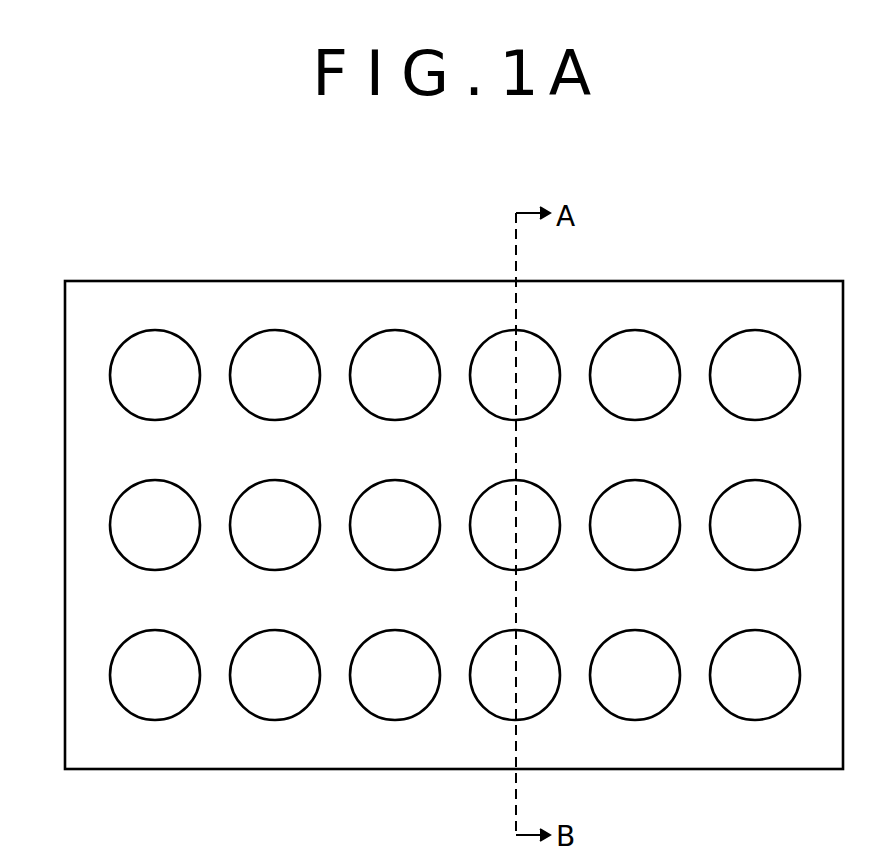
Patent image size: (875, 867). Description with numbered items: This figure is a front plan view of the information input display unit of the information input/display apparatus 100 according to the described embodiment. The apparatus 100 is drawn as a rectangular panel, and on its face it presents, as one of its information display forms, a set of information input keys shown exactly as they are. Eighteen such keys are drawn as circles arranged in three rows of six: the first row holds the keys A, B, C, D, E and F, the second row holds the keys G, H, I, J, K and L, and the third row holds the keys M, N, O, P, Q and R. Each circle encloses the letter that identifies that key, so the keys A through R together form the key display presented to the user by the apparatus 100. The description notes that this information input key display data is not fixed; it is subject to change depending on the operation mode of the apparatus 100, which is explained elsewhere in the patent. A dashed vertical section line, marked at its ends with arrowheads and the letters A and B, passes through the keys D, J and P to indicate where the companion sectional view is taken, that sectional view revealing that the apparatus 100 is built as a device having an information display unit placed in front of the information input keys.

The information input/display apparatus 100 is at (454, 494).
The information input key A is at (155, 375).
The information input key B is at (275, 375).
The information input key C is at (395, 375).
The information input key D is at (515, 375).
The information input key E is at (635, 375).
The information input key F is at (755, 375).
The information input key G is at (155, 525).
The information input key H is at (275, 525).
The information input key I is at (395, 525).
The information input key J is at (515, 525).
The information input key K is at (635, 525).
The information input key L is at (755, 525).
The information input key M is at (155, 675).
The information input key N is at (275, 675).
The information input key O is at (395, 675).
The information input key P is at (515, 675).
The information input key Q is at (635, 675).
The information input key R is at (755, 675).